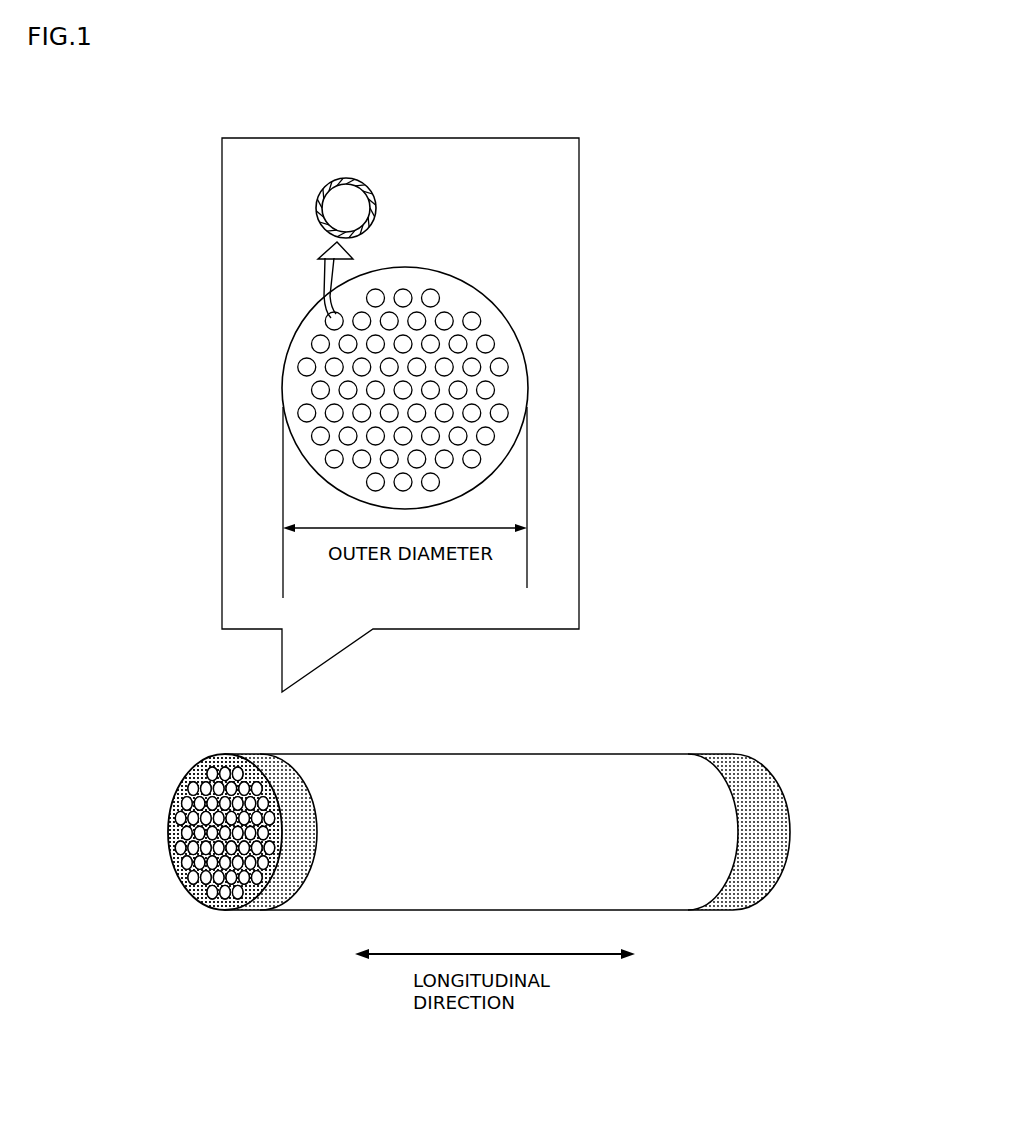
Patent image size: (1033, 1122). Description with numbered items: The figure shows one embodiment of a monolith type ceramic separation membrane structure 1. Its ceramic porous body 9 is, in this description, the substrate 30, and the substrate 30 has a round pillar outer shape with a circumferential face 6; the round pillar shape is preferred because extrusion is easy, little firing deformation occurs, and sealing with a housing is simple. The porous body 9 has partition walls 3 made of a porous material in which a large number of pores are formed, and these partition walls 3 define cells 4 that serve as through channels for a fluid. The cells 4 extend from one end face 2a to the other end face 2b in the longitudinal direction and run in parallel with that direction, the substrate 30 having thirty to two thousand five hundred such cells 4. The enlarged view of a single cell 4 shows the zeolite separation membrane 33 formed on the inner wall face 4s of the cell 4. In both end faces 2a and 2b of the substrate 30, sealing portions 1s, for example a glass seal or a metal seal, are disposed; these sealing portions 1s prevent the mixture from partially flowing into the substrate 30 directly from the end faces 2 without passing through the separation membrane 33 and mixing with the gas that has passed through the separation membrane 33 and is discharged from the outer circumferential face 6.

The ceramic separation membrane structure 1 is at (490, 836).
The sealing portion 1s is at (232, 912).
The end face 2 is at (490, 811).
The one end face 2a is at (200, 762).
The other end face 2b is at (780, 790).
The partition wall 3 is at (496, 356).
The cell 4 is at (340, 215).
The inner wall face 4s is at (336, 183).
The circumferential face 6 is at (670, 897).
The ceramic porous body 9 is at (479, 835).
The substrate 30 is at (460, 298).
The zeolite separation membrane 33 is at (376, 212).